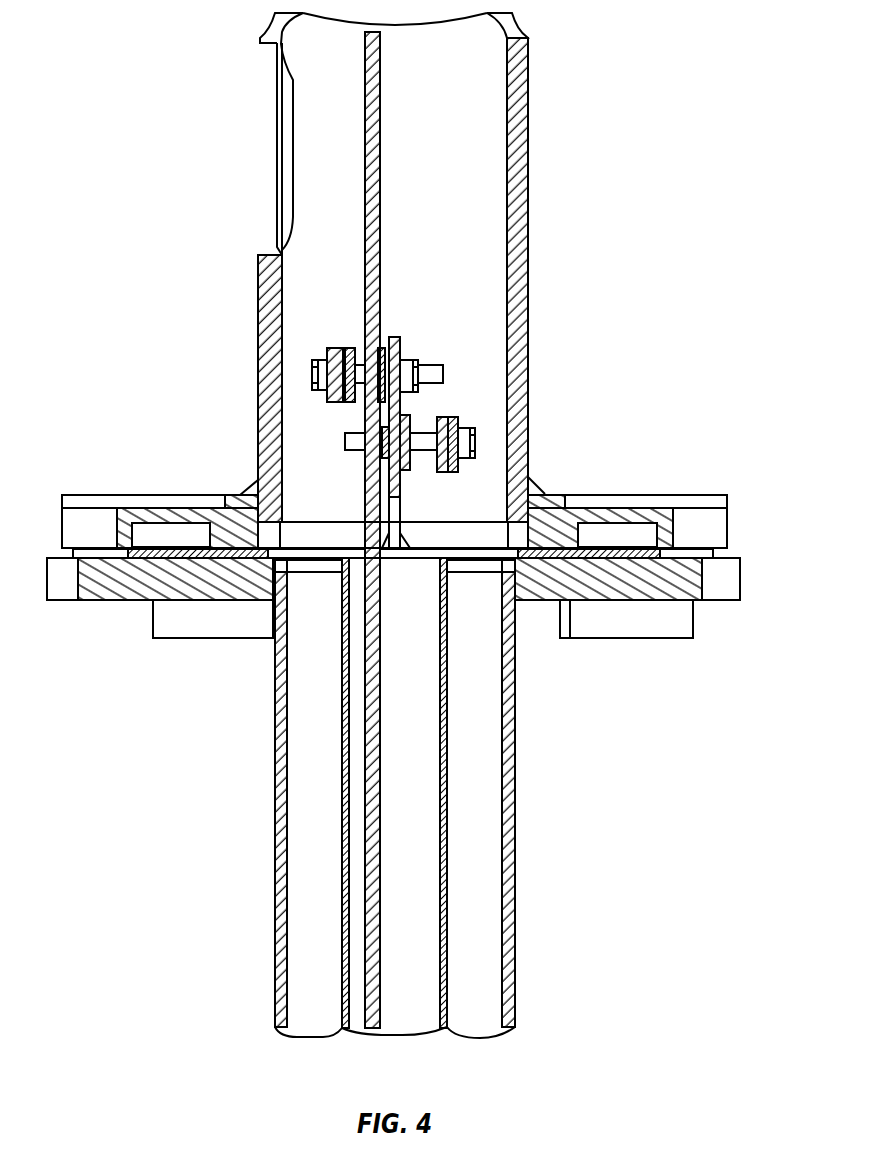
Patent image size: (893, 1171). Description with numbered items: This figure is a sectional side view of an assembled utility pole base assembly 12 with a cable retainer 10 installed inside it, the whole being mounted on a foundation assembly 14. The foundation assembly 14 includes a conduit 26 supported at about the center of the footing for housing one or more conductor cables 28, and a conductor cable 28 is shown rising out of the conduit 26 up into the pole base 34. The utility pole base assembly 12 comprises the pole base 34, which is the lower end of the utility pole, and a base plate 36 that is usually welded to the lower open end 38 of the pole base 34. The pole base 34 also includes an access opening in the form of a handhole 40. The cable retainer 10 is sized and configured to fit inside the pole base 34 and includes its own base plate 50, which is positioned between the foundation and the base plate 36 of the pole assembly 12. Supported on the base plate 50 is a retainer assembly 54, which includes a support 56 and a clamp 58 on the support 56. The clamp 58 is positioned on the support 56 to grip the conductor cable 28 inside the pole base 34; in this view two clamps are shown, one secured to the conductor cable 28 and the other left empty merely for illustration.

The cable retainer 10 is at (396, 337).
The utility pole base assembly 12 is at (528, 322).
The foundation assembly 14 is at (515, 710).
The conduit 26 is at (448, 768).
The conductor cable 28 is at (380, 167).
The pole base 34 is at (528, 268).
The base plate 36 is at (240, 495).
The lower open end 38 is at (330, 522).
The handhole 40 is at (285, 143).
The base plate 50 is at (540, 548).
The retainer assembly 54 is at (477, 443).
The support 56 is at (400, 412).
The clamp 58 is at (335, 349).